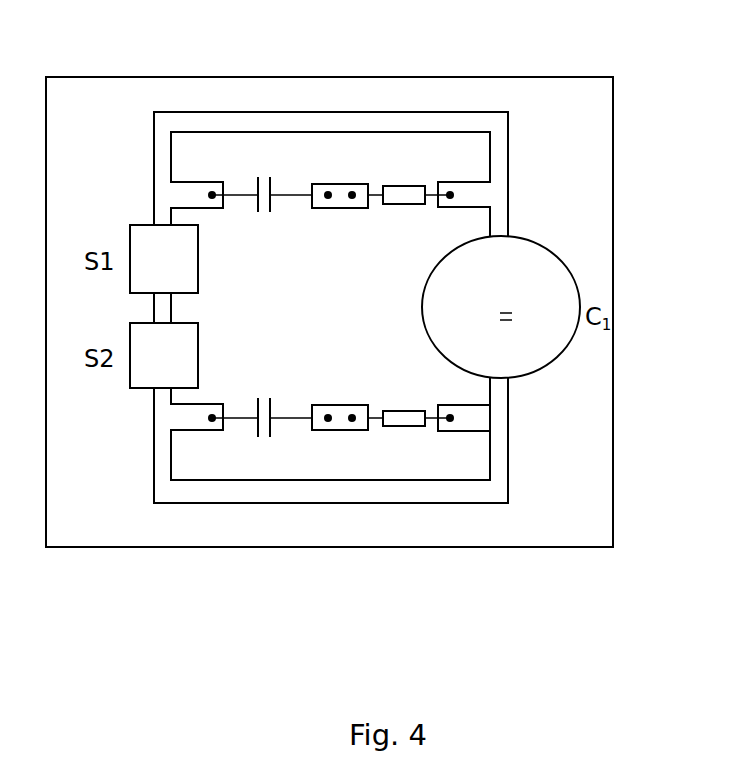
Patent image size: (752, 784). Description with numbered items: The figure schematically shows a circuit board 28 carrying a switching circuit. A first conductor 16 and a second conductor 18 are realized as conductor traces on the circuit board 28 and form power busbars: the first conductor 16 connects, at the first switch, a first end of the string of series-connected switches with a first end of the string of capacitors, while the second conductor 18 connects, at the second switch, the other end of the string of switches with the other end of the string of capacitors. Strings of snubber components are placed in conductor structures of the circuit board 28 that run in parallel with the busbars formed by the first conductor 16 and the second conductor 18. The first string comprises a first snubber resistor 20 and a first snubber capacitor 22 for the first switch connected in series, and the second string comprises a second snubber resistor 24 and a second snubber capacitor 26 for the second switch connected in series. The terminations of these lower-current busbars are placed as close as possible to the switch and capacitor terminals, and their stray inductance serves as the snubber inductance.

The first conductor 16 is at (366, 112).
The second conductor 18 is at (342, 503).
The first snubber resistor 20 is at (368, 218).
The first snubber capacitor 22 is at (263, 213).
The second snubber resistor 24 is at (368, 435).
The second snubber capacitor 26 is at (271, 434).
The circuit board 28 is at (598, 547).